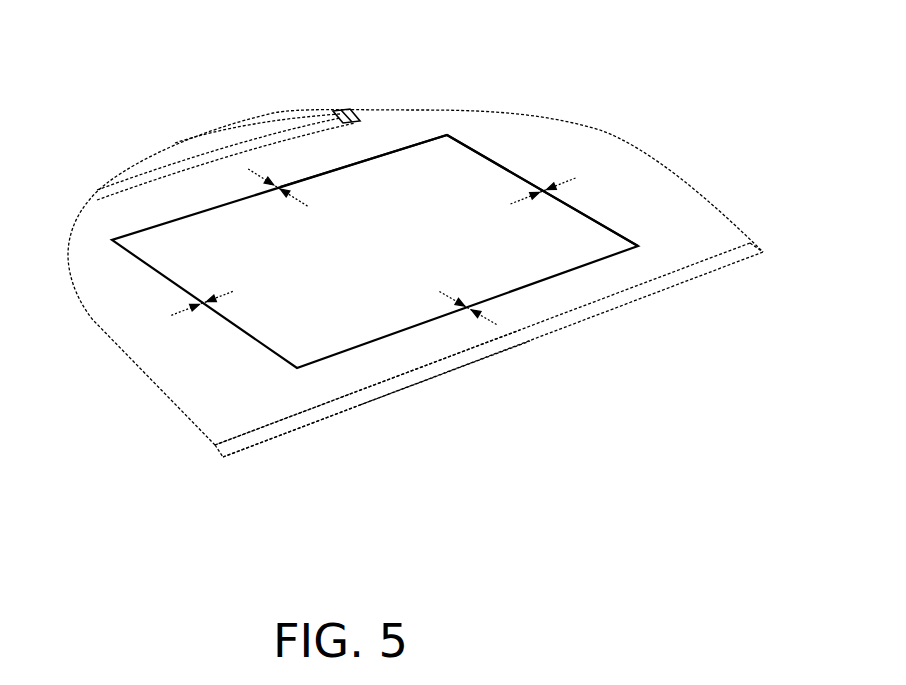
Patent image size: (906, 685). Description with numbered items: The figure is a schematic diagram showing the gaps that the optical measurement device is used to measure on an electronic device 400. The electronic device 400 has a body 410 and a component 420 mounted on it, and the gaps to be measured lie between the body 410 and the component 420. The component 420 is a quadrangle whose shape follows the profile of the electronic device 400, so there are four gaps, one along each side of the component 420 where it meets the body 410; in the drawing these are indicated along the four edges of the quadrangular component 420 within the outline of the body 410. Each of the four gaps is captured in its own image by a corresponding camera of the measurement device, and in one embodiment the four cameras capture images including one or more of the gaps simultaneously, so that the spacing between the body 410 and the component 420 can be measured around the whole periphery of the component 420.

The electronic device 400 is at (762, 454).
The body 410 is at (680, 245).
The component 420 is at (468, 263).